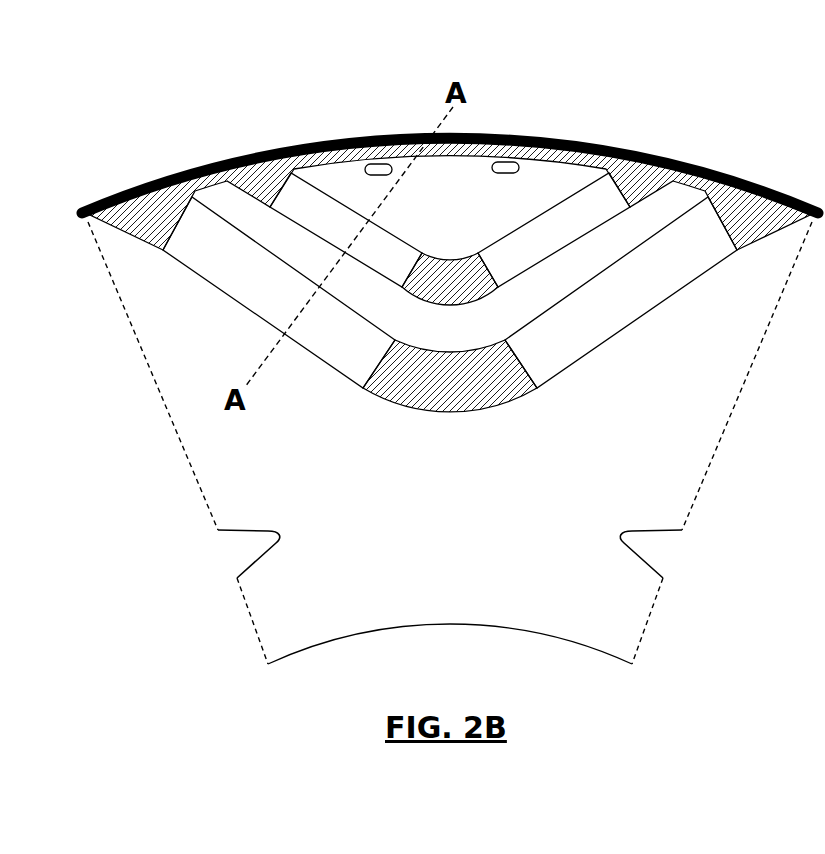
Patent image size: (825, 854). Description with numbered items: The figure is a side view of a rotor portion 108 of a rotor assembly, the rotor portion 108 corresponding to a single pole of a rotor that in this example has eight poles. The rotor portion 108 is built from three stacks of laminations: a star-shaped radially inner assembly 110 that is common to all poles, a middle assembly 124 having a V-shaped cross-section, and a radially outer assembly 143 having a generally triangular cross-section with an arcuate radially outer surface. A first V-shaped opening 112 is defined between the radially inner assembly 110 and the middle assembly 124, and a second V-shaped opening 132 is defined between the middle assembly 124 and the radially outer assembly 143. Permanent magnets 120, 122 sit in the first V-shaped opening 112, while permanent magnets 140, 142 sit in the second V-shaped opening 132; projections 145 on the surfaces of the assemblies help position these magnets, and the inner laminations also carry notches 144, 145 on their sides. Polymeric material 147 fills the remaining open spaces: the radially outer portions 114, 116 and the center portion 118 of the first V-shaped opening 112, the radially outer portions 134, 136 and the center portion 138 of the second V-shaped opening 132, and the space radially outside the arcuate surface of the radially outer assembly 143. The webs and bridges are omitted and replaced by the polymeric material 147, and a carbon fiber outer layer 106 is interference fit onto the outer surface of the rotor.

The carbon fiber outer layer 106 is at (697, 155).
The rotor portion 108 is at (250, 75).
The radially inner assembly 110 is at (450, 574).
The first V-shaped opening 112 is at (447, 414).
The radially outer portion of first V-shaped opening 114 is at (112, 262).
The radially outer portion of first V-shaped opening 116 is at (760, 240).
The center portion 118 is at (462, 393).
The permanent magnet 120 is at (318, 335).
The permanent magnet 122 is at (632, 315).
The middle assembly 124 is at (553, 281).
The second V-shaped opening 132 is at (470, 300).
The radially outer portion of second V-shaped opening 134 is at (258, 168).
The radially outer portion of second V-shaped opening 136 is at (637, 151).
The center portion 138 is at (432, 300).
The permanent magnet 140 is at (377, 243).
The permanent magnet 142 is at (545, 225).
The radially outer assembly 143 is at (442, 176).
The notch 144 is at (235, 548).
The projection 145 is at (655, 548).
The polymeric material 147 is at (147, 220).